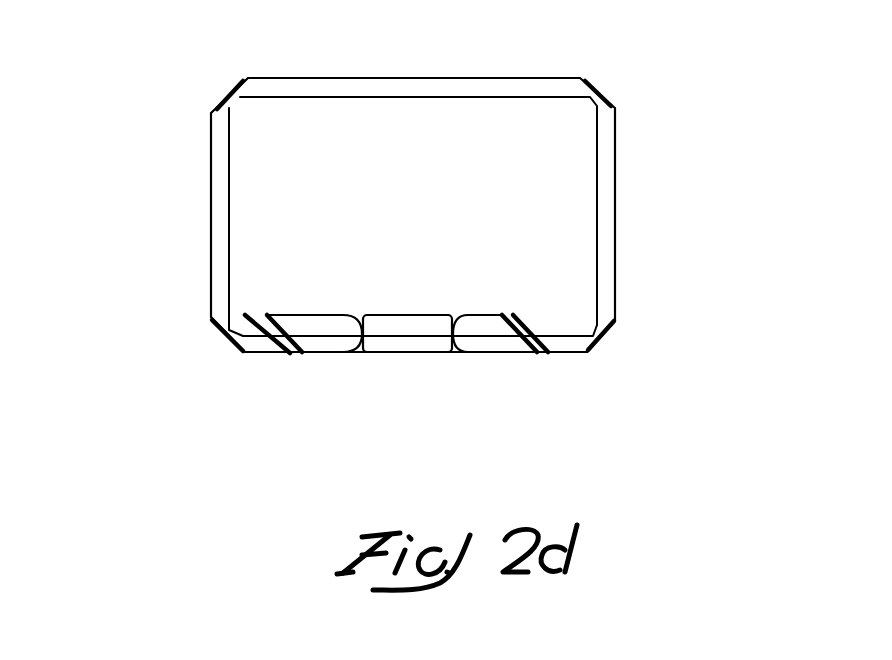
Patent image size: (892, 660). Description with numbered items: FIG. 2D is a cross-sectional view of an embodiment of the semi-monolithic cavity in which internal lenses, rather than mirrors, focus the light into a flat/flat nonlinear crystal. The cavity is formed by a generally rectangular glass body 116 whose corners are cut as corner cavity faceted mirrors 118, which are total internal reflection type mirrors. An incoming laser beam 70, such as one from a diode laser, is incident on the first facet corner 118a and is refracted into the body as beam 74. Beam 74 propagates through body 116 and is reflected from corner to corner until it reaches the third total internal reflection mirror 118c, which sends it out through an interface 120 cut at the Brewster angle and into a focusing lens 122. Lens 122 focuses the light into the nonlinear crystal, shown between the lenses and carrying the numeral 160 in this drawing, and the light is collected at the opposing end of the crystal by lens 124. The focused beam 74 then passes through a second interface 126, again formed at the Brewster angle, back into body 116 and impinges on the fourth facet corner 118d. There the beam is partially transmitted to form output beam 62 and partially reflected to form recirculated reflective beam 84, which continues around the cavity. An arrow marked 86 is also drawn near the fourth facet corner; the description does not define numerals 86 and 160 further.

The output beam 62 is at (665, 147).
The laser beam 70 is at (215, 100).
The refracted beam 74 is at (452, 87).
The recirculated reflective beam 84 is at (240, 210).
The folding direction arrow 86 is at (228, 340).
The glass body 116 is at (535, 118).
The corner cavity faceted mirror 118 is at (593, 90).
The facet corner 118a is at (243, 85).
The third total internal reflection mirror 118c is at (596, 348).
The fourth facet corner 118d is at (237, 347).
The interface 120 is at (573, 355).
The focusing lens 122 is at (507, 353).
The lens 124 is at (322, 358).
The second interface 126 is at (292, 355).
The center tab 160 is at (417, 355).